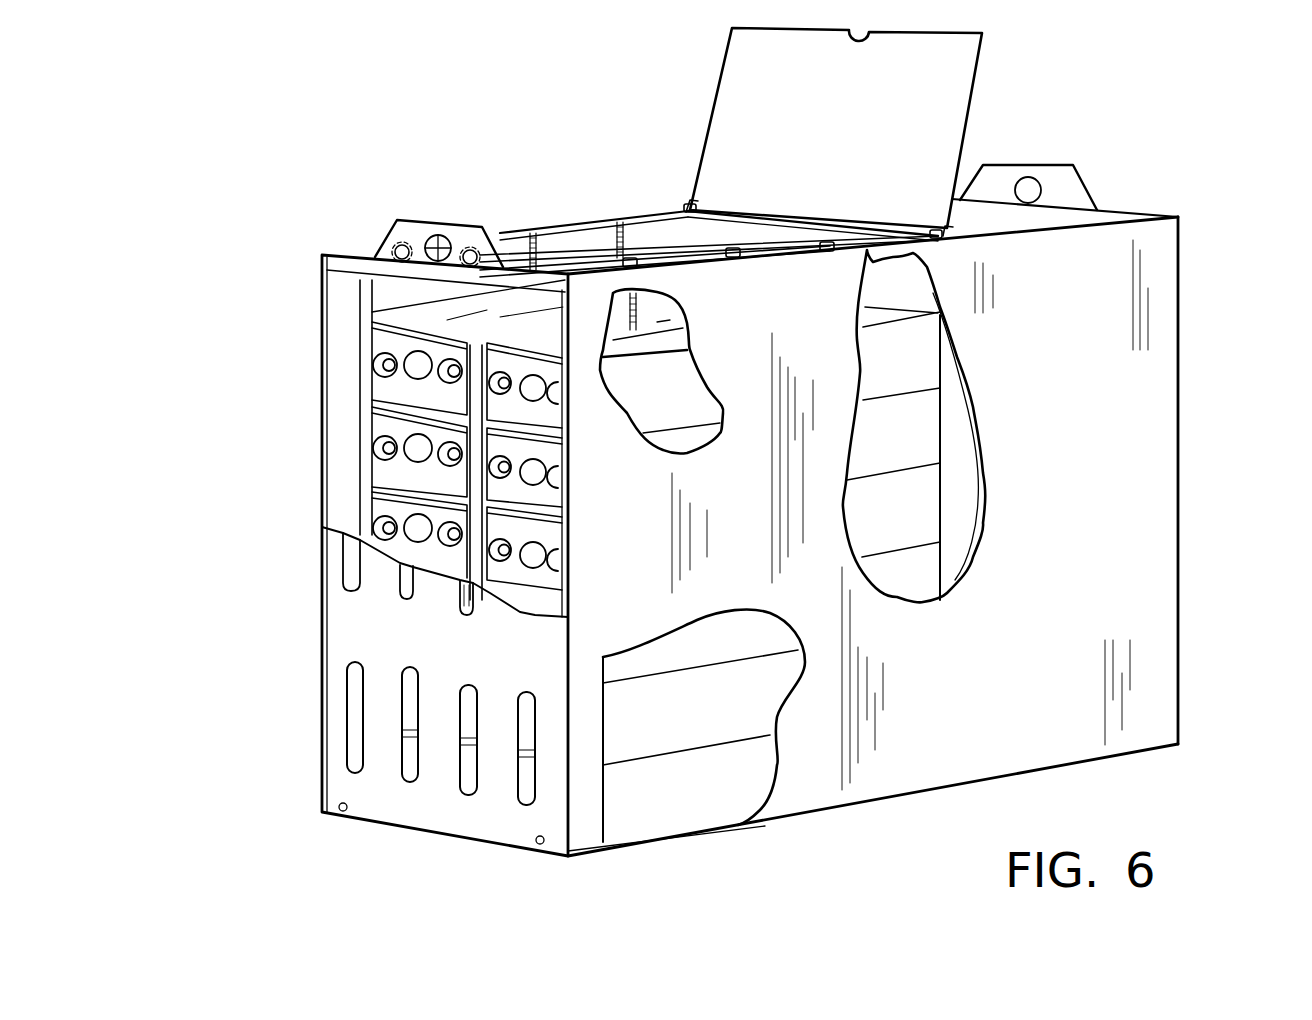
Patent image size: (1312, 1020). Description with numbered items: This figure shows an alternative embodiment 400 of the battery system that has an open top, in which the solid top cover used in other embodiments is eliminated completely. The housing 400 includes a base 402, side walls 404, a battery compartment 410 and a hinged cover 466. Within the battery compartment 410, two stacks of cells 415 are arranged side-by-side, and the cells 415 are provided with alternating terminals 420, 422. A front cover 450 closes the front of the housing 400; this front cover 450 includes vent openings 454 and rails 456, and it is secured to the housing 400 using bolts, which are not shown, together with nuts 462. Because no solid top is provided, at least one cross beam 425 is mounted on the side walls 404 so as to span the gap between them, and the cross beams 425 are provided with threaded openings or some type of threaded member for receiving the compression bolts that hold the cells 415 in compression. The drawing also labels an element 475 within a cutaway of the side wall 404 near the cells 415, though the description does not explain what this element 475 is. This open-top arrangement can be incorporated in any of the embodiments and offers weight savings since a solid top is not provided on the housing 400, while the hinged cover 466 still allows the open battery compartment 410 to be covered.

The alternative embodiment 400 is at (621, 170).
The base 402 is at (813, 817).
The side walls 404 is at (1145, 697).
The battery compartment 410 is at (393, 287).
The cells 415 is at (712, 795).
The terminals 420 is at (375, 372).
The terminals 422 is at (375, 447).
The cross beam 425 is at (618, 233).
The front cover 450 is at (333, 690).
The vent openings 454 is at (527, 693).
The rails 456 is at (613, 843).
The nuts 462 is at (377, 247).
The hinged cover 466 is at (740, 148).
The bus bar 475 is at (650, 348).